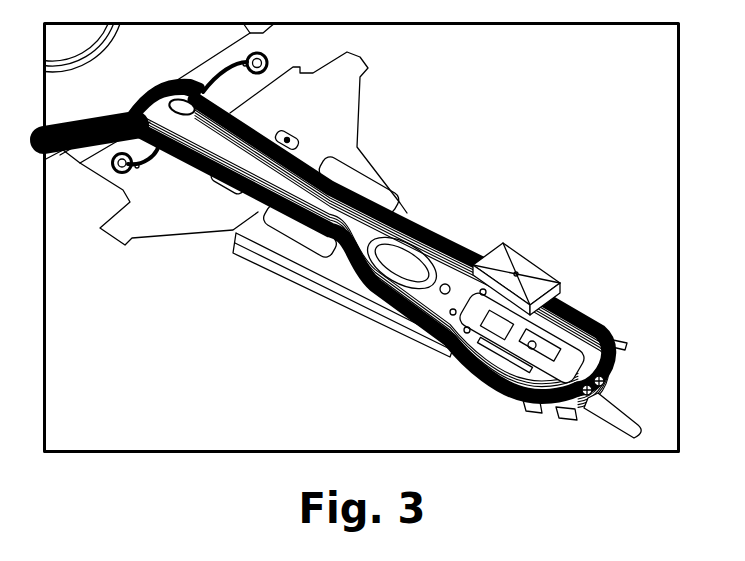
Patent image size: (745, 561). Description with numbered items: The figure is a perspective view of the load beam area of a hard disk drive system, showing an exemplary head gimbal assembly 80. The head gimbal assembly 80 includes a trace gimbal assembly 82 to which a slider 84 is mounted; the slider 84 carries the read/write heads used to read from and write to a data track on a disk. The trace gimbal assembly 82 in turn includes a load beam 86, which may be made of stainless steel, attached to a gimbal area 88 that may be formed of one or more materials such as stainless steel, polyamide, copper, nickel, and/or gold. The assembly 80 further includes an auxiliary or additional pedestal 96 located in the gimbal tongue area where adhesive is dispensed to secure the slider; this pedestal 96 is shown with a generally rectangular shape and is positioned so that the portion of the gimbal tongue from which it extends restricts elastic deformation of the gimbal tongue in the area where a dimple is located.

The head gimbal assembly 80 is at (525, 135).
The trace gimbal assembly 82 is at (306, 315).
The slider 84 is at (520, 267).
The load beam 86 is at (347, 103).
The gimbal area 88 is at (466, 379).
The pedestal 96 is at (576, 310).